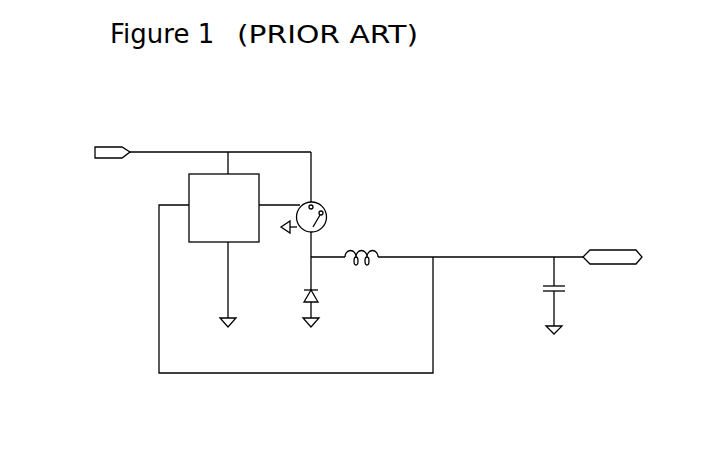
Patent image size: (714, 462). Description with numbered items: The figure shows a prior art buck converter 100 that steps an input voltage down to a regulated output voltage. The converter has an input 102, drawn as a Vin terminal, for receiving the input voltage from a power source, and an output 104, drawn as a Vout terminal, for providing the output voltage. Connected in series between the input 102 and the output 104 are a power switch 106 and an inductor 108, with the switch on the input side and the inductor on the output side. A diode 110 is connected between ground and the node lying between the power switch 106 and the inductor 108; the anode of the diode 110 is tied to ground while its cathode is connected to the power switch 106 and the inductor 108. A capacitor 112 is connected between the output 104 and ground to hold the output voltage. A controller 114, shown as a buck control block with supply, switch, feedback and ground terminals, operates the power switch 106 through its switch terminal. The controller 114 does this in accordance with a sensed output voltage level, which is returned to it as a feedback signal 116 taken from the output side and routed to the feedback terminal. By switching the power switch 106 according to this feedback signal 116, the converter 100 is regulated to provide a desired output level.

The buck converter 100 is at (499, 127).
The input 102 is at (118, 158).
The output 104 is at (612, 246).
The power switch S1 106 is at (322, 203).
The inductor L1 108 is at (389, 254).
The diode D1 110 is at (312, 289).
The capacitor C1 112 is at (553, 290).
The controller 114 is at (189, 226).
The feedback signal (FB) 116 is at (158, 355).